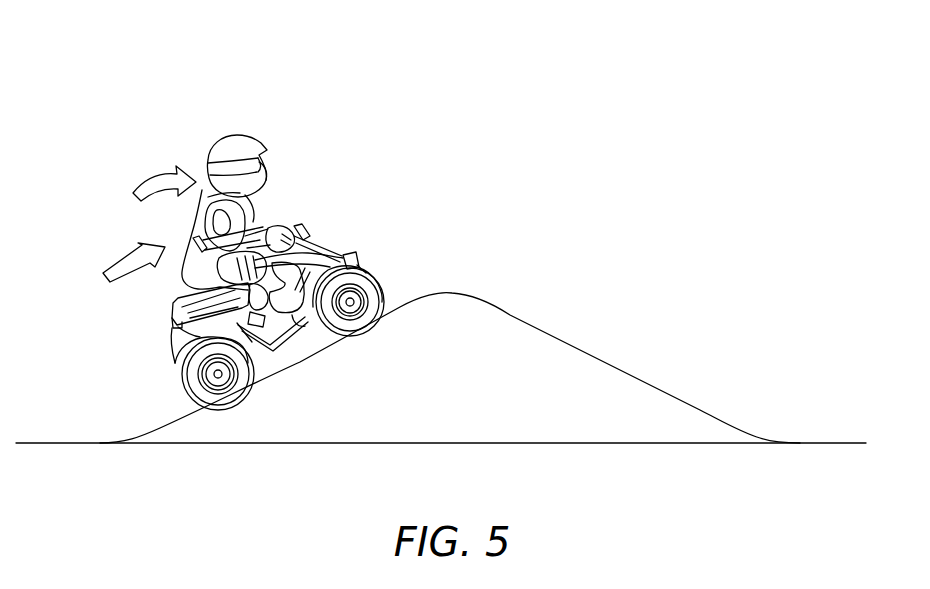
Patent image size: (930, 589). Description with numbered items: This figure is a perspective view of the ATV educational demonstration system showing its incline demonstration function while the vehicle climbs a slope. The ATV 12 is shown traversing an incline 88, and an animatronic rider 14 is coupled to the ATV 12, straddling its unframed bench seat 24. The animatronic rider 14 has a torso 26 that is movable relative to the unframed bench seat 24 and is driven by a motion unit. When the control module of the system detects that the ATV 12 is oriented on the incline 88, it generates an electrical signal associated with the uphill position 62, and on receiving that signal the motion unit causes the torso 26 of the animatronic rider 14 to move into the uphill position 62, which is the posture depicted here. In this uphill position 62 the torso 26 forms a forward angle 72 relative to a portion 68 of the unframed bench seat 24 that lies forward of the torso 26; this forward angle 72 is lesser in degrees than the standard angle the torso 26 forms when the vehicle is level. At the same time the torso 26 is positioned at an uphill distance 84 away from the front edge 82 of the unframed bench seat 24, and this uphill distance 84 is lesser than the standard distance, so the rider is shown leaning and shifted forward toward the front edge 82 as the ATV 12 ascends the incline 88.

The ATV 12 is at (153, 350).
The animatronic rider 14 is at (183, 108).
The unframed bench seat 24 is at (180, 298).
The torso 26 is at (257, 224).
The uphill position 62 is at (323, 148).
The portion of the unframed bench seat 68 is at (298, 231).
The forward angle 72 is at (142, 188).
The front edge 82 is at (320, 231).
The uphill distance 84 is at (122, 259).
The incline 88 is at (393, 328).